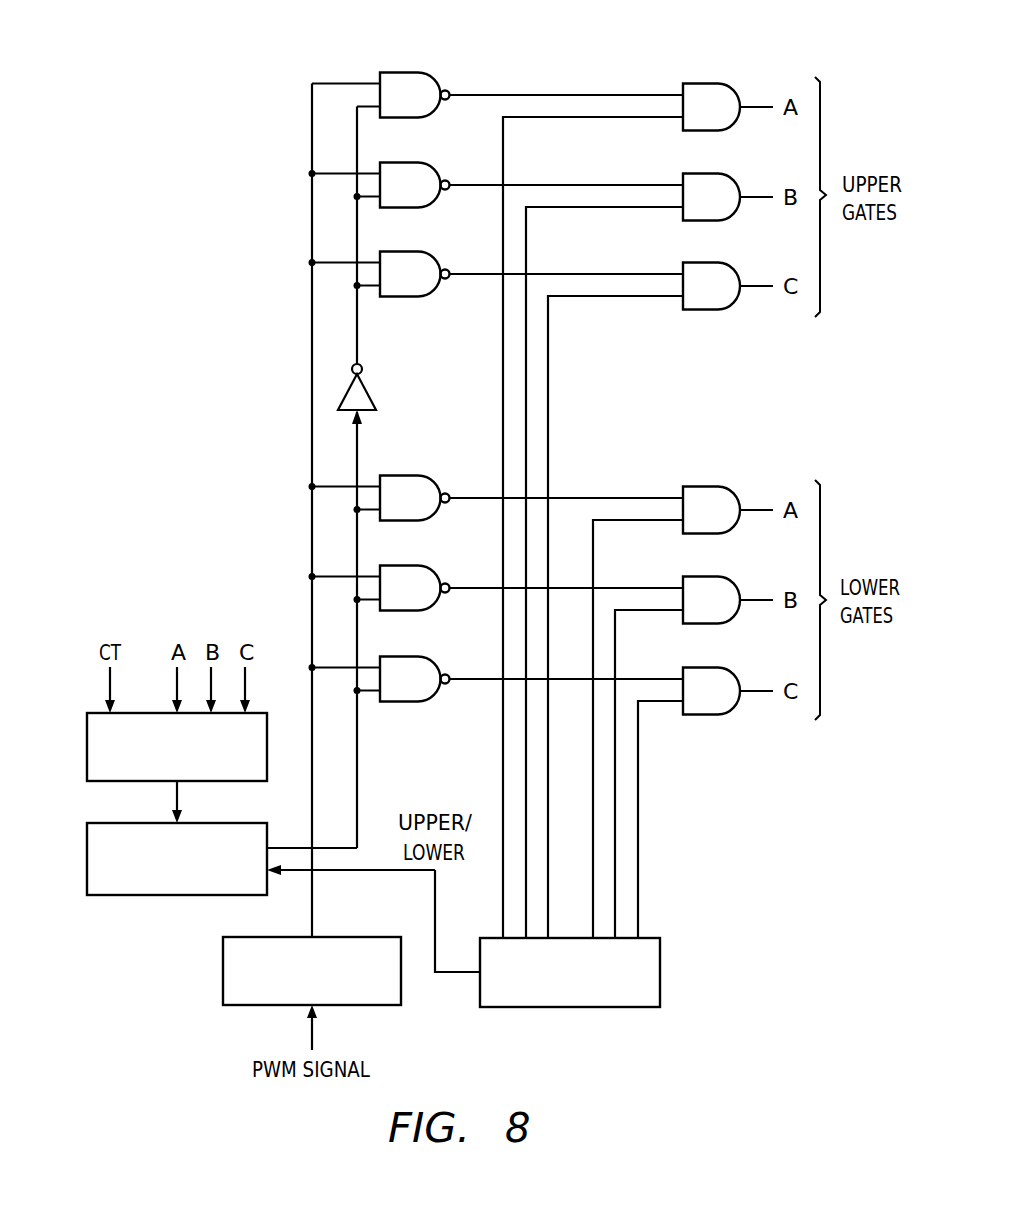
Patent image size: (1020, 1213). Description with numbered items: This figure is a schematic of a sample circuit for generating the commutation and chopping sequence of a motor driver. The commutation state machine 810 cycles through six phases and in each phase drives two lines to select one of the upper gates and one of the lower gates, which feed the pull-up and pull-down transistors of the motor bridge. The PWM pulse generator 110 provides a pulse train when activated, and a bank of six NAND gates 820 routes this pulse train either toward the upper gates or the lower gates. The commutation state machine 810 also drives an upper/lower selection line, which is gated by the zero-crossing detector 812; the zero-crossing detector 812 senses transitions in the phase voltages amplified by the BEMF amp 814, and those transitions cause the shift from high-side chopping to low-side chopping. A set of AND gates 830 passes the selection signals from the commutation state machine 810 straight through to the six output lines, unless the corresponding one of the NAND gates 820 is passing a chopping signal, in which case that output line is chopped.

The NAND gates 820 is at (400, 72).
The AND gates 830 is at (707, 83).
The BEMF amp 814 is at (87, 748).
The zero-crossing detector 812 is at (87, 862).
The PWM pulse generator 110 is at (223, 972).
The commutation state machine 810 is at (660, 972).